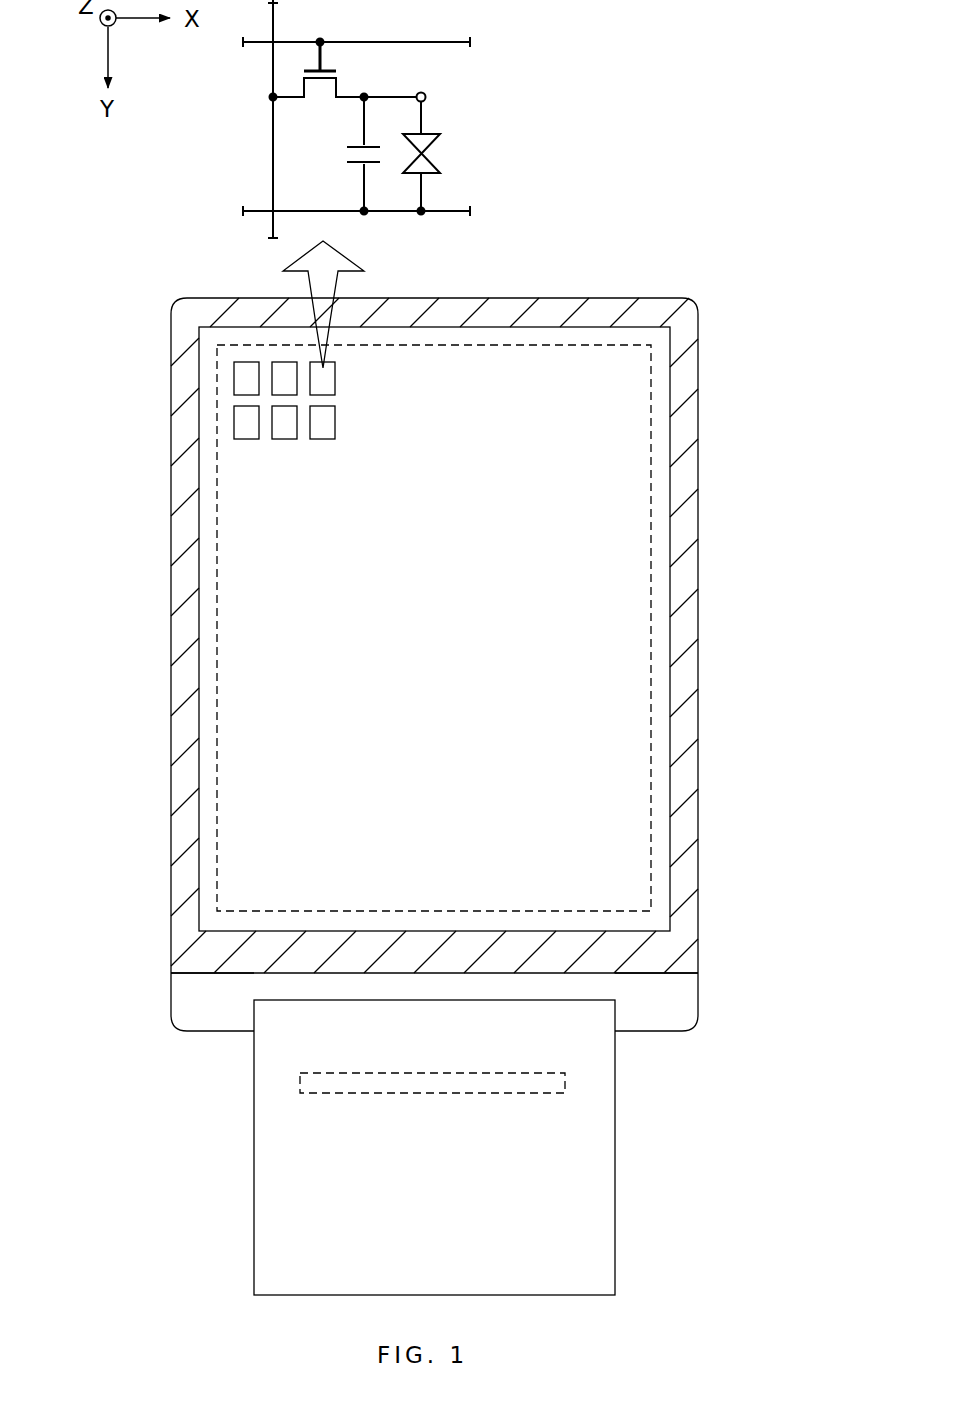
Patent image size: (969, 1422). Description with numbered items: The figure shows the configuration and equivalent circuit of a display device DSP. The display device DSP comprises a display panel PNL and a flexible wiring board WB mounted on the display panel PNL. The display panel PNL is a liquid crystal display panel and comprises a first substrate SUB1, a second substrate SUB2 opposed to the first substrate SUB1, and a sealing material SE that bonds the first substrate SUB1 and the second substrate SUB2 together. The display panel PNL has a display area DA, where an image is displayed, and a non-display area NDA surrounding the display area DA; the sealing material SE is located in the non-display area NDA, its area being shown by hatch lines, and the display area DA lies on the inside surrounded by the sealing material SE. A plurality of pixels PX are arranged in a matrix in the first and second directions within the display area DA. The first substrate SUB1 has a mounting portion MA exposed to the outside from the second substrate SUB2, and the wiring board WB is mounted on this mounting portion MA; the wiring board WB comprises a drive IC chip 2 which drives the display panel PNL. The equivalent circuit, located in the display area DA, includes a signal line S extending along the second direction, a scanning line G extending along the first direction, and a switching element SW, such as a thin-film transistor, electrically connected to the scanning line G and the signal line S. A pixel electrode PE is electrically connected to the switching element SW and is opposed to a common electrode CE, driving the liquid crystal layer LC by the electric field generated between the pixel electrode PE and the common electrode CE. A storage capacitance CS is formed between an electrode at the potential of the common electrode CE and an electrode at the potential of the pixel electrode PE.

The display device DSP is at (420, 673).
The display panel PNL is at (420, 626).
The first substrate SUB1 is at (167, 1008).
The second substrate SUB2 is at (167, 942).
The sealing material SE is at (171, 644).
The display area DA is at (585, 344).
The non-display area NDA is at (625, 330).
The pixels PX is at (336, 377).
The mounting portion MA is at (675, 1000).
The wiring board WB is at (614, 1147).
The drive IC chip 2 is at (565, 1082).
The scanning line G is at (245, 41).
The signal line S is at (273, 152).
The switching element SW is at (348, 81).
The pixel electrode PE is at (427, 97).
The storage capacitance CS is at (349, 153).
The liquid crystal layer LC is at (446, 152).
The common electrode CE is at (450, 212).